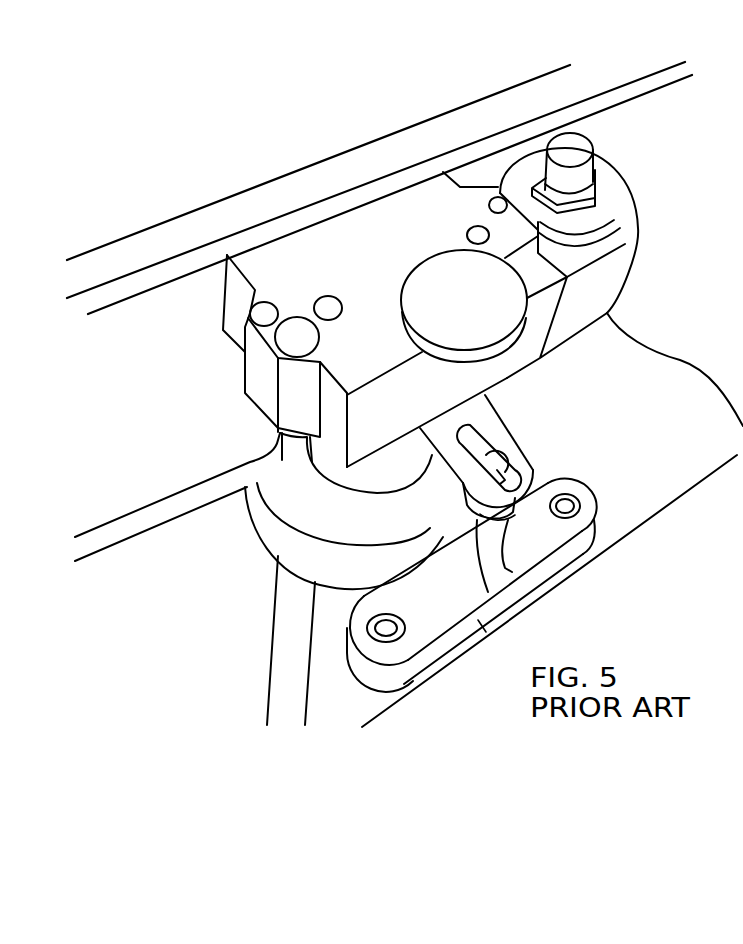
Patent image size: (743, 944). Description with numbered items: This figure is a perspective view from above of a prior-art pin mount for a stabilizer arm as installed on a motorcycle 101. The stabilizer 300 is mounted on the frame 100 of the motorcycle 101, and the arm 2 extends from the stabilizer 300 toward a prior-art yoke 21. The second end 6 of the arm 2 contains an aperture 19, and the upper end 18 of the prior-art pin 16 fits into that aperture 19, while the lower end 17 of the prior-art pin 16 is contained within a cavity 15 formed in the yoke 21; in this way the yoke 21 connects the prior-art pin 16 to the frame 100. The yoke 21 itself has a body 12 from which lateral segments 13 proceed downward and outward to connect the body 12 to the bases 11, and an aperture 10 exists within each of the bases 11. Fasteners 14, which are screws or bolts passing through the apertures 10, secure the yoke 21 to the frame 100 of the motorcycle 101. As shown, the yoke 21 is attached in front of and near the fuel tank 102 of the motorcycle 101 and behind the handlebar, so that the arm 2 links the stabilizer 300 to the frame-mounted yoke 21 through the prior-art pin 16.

The arm 2 is at (500, 451).
The second end of the arm 6 is at (525, 462).
The aperture 10 is at (573, 500).
The base 11 is at (587, 550).
The body 12 is at (480, 590).
The lateral segment 13 is at (520, 557).
The fastener 14 is at (580, 507).
The cavity 15 is at (480, 615).
The prior-art pin 16 is at (481, 537).
The lower end of the prior-art pin 17 is at (515, 515).
The upper end of the prior-art pin 18 is at (497, 462).
The aperture 19 is at (487, 438).
The yoke 21 is at (482, 627).
The frame 100 is at (333, 620).
The motorcycle 101 is at (618, 73).
The fuel tank 102 is at (689, 565).
The stabilizer 300 is at (393, 250).